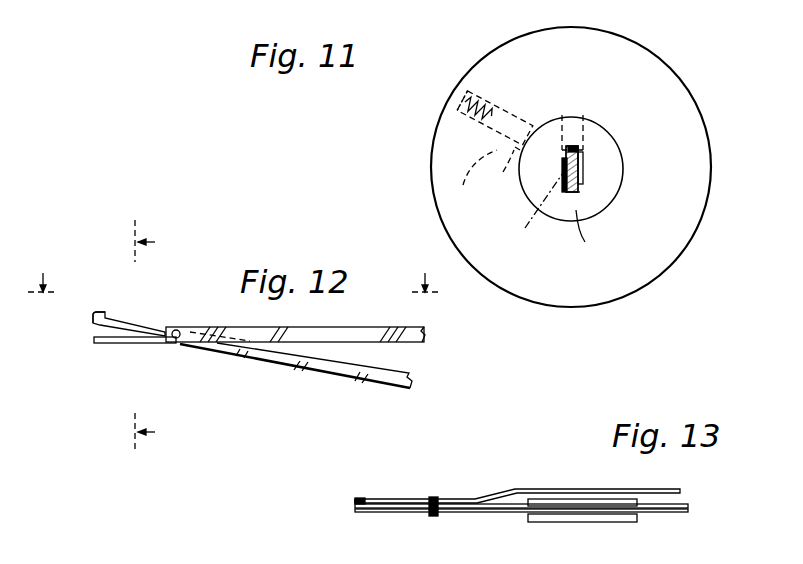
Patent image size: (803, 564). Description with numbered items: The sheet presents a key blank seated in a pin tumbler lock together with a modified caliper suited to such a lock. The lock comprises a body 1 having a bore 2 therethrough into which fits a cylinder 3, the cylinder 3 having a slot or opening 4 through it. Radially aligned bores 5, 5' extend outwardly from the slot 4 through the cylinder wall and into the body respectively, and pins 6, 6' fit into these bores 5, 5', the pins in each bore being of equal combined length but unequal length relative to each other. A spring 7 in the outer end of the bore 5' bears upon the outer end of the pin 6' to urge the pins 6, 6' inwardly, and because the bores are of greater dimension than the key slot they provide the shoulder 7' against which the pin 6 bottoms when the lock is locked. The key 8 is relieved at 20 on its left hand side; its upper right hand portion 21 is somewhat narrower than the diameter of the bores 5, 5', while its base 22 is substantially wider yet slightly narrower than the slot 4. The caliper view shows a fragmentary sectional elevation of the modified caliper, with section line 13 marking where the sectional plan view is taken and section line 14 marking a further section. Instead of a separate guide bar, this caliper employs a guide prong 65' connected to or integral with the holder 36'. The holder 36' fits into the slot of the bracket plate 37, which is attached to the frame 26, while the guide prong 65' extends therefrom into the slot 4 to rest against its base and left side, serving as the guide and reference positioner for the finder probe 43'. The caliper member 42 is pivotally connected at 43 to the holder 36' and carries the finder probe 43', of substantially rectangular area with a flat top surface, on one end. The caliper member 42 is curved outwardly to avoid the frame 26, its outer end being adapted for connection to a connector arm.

In FIG. 11, the body 1 is at (690, 225).
In FIG. 11, the bore 2 is at (605, 208).
In FIG. 11, the cylinder 3 is at (584, 236).
In FIG. 11, the slot 4 is at (587, 167).
In FIG. 11, the bore 5 is at (603, 122).
In FIG. 11, the bore 5' is at (474, 175).
In FIG. 11, the pin 6 is at (573, 110).
In FIG. 11, the pin 6' is at (502, 169).
In FIG. 11, the spring 7 is at (470, 119).
In FIG. 11, the shoulder 7' is at (538, 209).
In FIG. 11, the key 8 is at (585, 177).
In FIG. 12, the line 13— 13 is at (234, 270).
In FIG. 12, the line 14— 14 is at (156, 335).
In FIG. 11, the relief 20 is at (563, 166).
In FIG. 11, the upper right hand portion 21 is at (583, 155).
In FIG. 11, the base 22 is at (585, 186).
In FIG. 13, the frame 26 is at (568, 499).
In FIG. 12, the holder 36' is at (295, 315).
In FIG. 13, the holder 36' is at (521, 531).
In FIG. 12, the bracket plate 37 is at (296, 365).
In FIG. 13, the bracket plate 37 is at (592, 522).
In FIG. 12, the caliper member 42 is at (128, 330).
In FIG. 13, the caliper member 42 is at (515, 489).
In FIG. 12, the pivot 43 is at (175, 314).
In FIG. 13, the pivot 43 is at (435, 486).
In FIG. 12, the finder probe 43' is at (103, 298).
In FIG. 13, the finder probe 43' is at (351, 473).
In FIG. 12, the guide prong 65' is at (117, 353).
In FIG. 13, the guide prong 65' is at (518, 524).